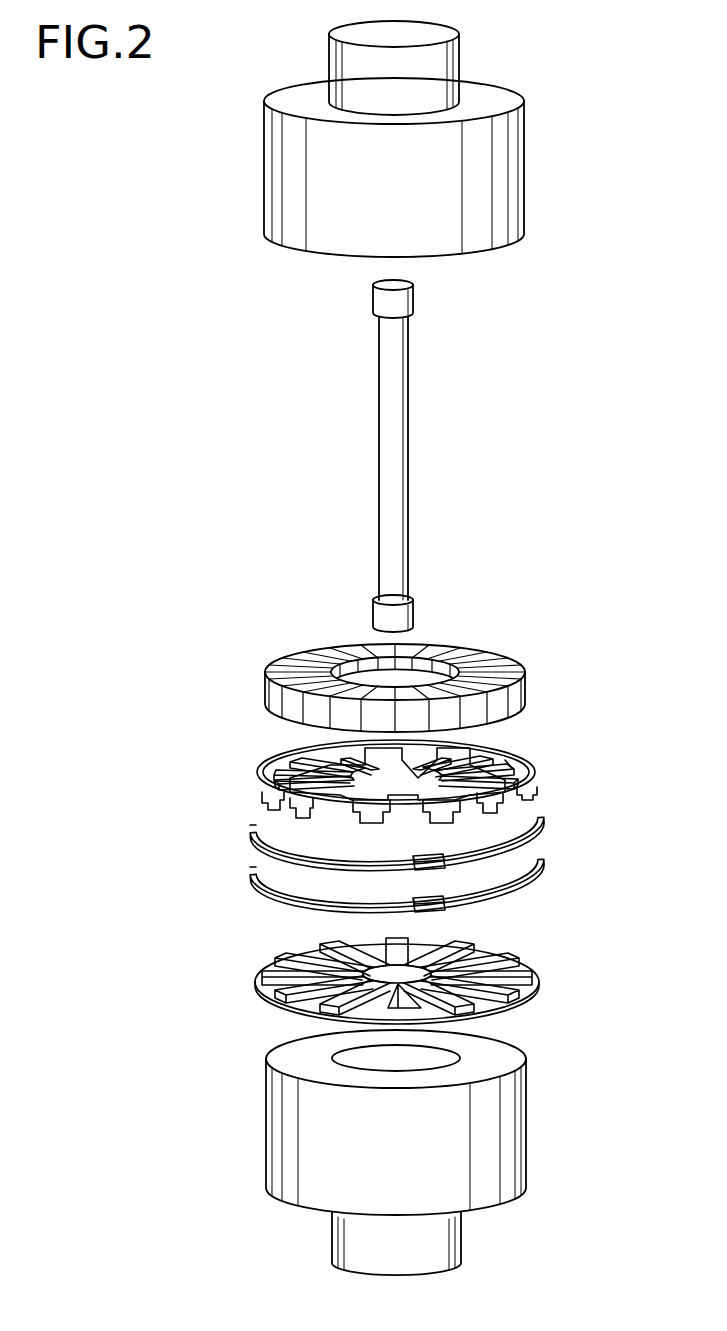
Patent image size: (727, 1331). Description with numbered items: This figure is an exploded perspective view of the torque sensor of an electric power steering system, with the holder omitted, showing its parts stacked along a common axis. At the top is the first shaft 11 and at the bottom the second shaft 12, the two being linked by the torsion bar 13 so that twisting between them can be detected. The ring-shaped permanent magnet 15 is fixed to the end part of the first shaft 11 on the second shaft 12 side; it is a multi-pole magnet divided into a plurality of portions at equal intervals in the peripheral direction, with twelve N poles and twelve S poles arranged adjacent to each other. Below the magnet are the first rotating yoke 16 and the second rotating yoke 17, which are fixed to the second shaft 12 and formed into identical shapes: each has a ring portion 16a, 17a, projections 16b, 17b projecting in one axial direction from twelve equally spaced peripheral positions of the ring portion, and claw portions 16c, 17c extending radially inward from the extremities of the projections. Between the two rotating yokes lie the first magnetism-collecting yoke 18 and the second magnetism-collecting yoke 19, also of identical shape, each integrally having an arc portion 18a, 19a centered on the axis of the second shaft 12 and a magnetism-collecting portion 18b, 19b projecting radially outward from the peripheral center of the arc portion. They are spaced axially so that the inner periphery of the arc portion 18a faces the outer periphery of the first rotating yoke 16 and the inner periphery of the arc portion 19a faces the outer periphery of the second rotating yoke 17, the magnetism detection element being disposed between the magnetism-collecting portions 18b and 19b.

The first shaft 11 is at (482, 197).
The second shaft 12 is at (527, 1175).
The torsion bar 13 is at (399, 420).
The permanent magnet 15 is at (462, 645).
The first rotating yoke 16 is at (401, 764).
The ring portion 16a is at (517, 757).
The projections 16b is at (297, 818).
The claw portions 16c is at (415, 762).
The second rotating yoke 17 is at (406, 1025).
The ring portion 17a is at (335, 1003).
The projections 17b is at (407, 1005).
The claw portions 17c is at (440, 945).
The first magnetism-collecting yoke 18 is at (393, 867).
The arc portion 18a is at (252, 833).
The magnetism-collecting portion 18b is at (462, 866).
The second magnetism-collecting yoke 19 is at (394, 895).
The arc portion 19a is at (252, 875).
The magnetism-collecting portion 19b is at (442, 910).